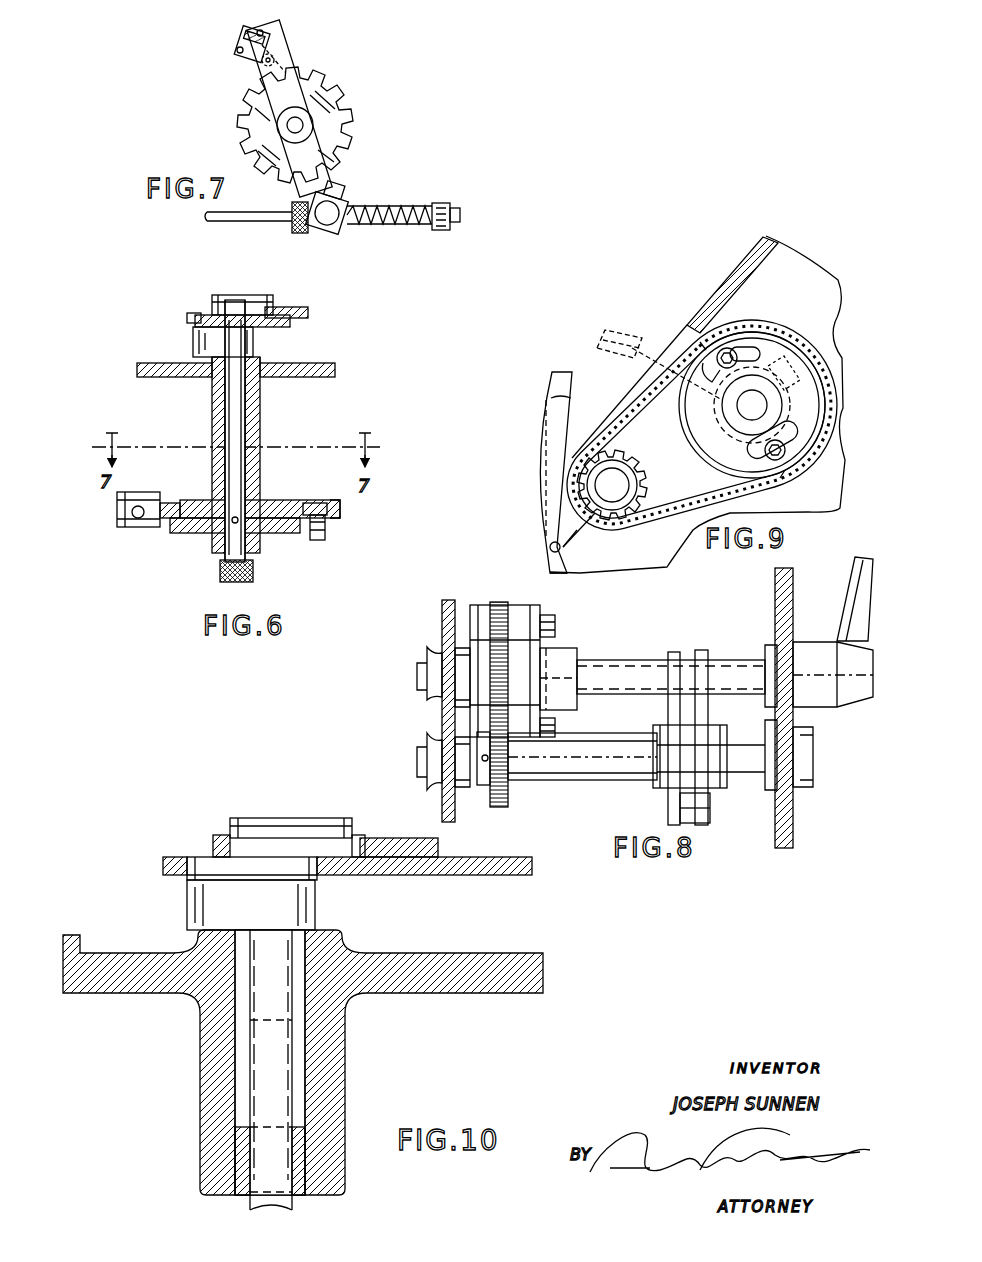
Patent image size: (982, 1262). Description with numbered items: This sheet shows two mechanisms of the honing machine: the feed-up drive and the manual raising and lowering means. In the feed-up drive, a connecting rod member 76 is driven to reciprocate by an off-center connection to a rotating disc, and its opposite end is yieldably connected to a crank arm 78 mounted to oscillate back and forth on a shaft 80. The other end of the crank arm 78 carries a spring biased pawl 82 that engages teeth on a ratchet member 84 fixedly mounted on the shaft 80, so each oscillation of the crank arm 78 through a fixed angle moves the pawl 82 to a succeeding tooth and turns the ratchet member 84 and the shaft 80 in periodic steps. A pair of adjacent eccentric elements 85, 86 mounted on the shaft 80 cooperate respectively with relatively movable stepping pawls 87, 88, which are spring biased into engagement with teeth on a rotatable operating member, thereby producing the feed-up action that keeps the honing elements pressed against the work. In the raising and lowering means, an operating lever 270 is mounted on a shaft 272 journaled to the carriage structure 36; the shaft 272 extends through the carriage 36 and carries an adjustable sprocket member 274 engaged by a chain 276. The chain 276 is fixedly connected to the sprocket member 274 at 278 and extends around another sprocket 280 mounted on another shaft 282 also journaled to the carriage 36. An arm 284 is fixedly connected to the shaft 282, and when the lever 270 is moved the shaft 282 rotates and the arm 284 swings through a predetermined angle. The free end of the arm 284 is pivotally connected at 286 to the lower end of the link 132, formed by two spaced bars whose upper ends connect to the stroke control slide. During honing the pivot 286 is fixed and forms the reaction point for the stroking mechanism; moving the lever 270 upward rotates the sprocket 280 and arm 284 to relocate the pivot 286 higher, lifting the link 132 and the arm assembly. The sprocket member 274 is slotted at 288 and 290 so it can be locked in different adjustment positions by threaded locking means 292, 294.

In FIG. 8, the carriage structure 36 is at (800, 812).
In FIG. 7, the connecting rod member 76 is at (250, 221).
In FIG. 6, the connecting rod member 76 is at (132, 512).
In FIG. 7, the crank arm 78 is at (338, 195).
In FIG. 6, the crank arm 78 is at (137, 528).
In FIG. 7, the shaft 80 is at (295, 125).
In FIG. 6, the shaft 80 is at (248, 558).
In FIG. 10, the shaft 80 is at (283, 1087).
In FIG. 7, the spring biased pawl 82 is at (248, 60).
In FIG. 6, the spring biased pawl 82 is at (318, 540).
In FIG. 7, the ratchet member 84 is at (345, 143).
In FIG. 6, the ratchet member 84 is at (340, 512).
In FIG. 6, the eccentric element 85 is at (235, 305).
In FIG. 10, the eccentric element 85 is at (283, 848).
In FIG. 6, the eccentric element 86 is at (195, 318).
In FIG. 10, the eccentric element 86 is at (317, 868).
In FIG. 6, the stepping pawl 87 is at (296, 306).
In FIG. 10, the stepping pawl 87 is at (383, 840).
In FIG. 6, the stepping pawl 88 is at (272, 325).
In FIG. 10, the stepping pawl 88 is at (398, 875).
In FIG. 9, the link 132 is at (560, 372).
In FIG. 8, the link 132 is at (680, 735).
In FIG. 9, the operating lever 270 is at (640, 334).
In FIG. 8, the operating lever 270 is at (852, 580).
In FIG. 9, the shaft 272 is at (755, 405).
In FIG. 8, the shaft 272 is at (660, 665).
In FIG. 9, the adjustable sprocket member 274 is at (782, 335).
In FIG. 8, the adjustable sprocket member 274 is at (505, 615).
In FIG. 9, the chain 276 is at (638, 424).
In FIG. 8, the chain 276 is at (500, 706).
In FIG. 9, the chain connection point 278 is at (820, 356).
In FIG. 9, the sprocket 280 is at (646, 482).
In FIG. 8, the sprocket 280 is at (487, 795).
In FIG. 9, the shaft 282 is at (605, 480).
In FIG. 8, the shaft 282 is at (640, 786).
In FIG. 9, the arm 284 is at (576, 532).
In FIG. 8, the arm 284 is at (705, 826).
In FIG. 9, the pivot 286 is at (565, 575).
In FIG. 8, the pivot 286 is at (712, 797).
In FIG. 9, the slot 288 is at (735, 350).
In FIG. 9, the slot 290 is at (786, 449).
In FIG. 9, the threaded locking means 292 is at (702, 345).
In FIG. 8, the threaded locking means 292 is at (557, 630).
In FIG. 9, the threaded locking means 294 is at (780, 478).
In FIG. 8, the threaded locking means 294 is at (558, 732).